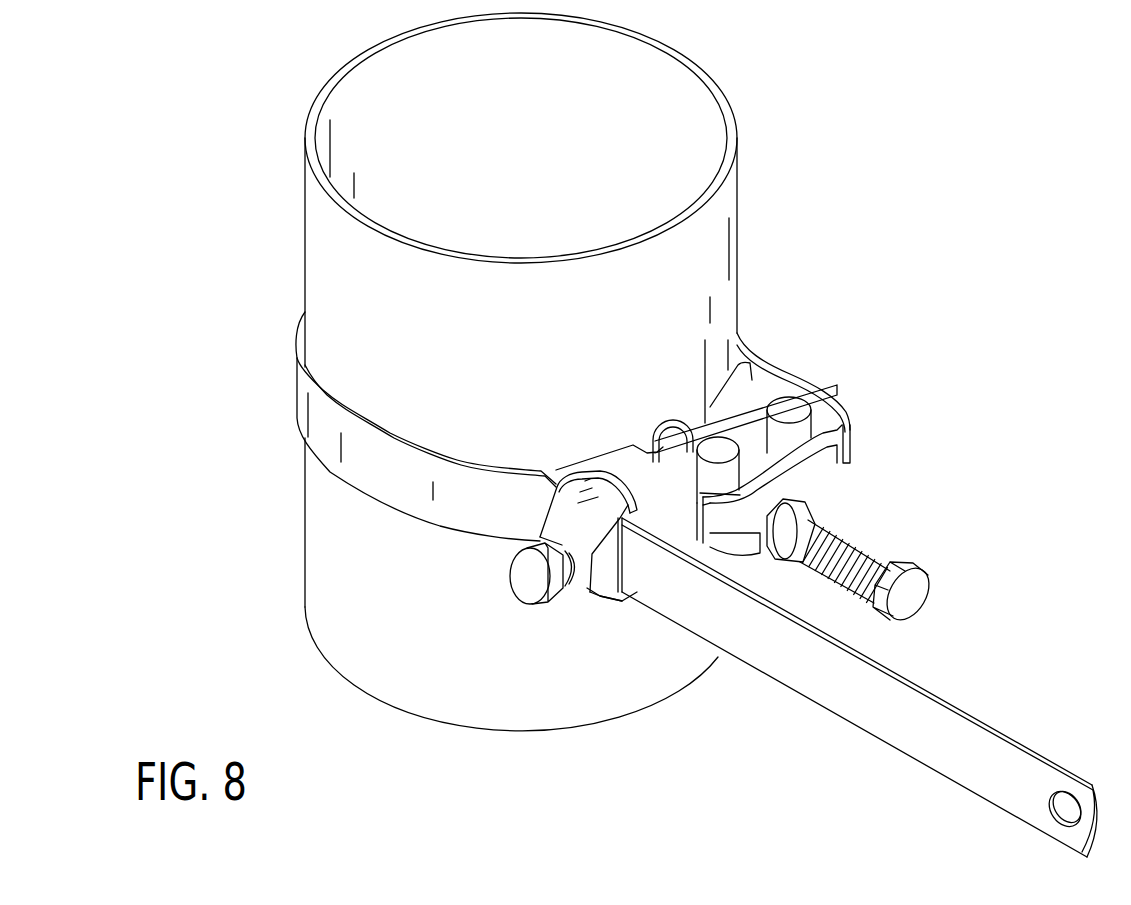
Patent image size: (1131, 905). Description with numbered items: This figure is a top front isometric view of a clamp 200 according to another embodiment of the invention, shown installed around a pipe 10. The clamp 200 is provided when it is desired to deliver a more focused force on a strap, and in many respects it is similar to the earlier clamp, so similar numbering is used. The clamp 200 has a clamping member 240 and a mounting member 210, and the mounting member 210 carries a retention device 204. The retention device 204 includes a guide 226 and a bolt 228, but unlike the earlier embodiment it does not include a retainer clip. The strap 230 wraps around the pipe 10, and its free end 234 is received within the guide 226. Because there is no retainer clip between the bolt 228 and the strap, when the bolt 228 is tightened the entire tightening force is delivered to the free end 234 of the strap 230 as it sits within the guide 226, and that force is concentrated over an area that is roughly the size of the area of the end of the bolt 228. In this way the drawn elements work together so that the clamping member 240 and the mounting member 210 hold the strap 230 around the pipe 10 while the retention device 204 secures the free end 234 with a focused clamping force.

The pipe 10 is at (738, 185).
The clamp 200 is at (818, 272).
The strap 230 is at (305, 397).
The mounting member 210 is at (618, 447).
The guide 226 is at (563, 512).
The bolt 228 is at (520, 582).
The clamping member 240 is at (822, 475).
The free end 234 is at (670, 600).
The retention device 204 is at (600, 620).